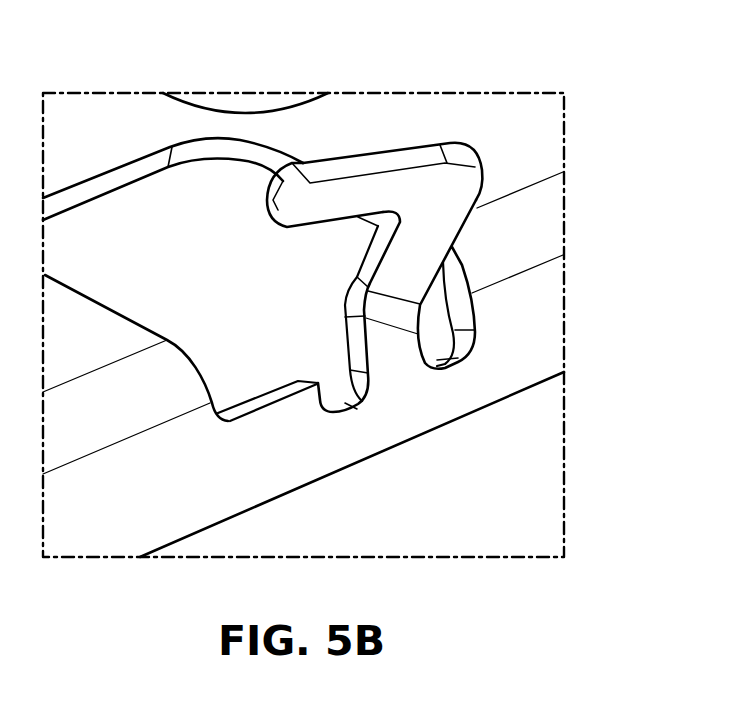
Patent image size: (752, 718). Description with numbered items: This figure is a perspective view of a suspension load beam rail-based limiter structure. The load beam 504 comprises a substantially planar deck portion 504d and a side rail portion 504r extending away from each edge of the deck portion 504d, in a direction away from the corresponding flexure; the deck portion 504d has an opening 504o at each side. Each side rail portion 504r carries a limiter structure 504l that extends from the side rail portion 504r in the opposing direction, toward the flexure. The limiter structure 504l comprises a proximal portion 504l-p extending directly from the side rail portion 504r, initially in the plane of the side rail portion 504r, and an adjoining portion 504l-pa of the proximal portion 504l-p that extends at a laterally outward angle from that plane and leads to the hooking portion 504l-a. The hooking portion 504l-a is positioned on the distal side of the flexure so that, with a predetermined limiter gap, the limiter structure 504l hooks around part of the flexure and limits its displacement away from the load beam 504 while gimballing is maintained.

The load beam 504 is at (528, 58).
The deck portion 504d is at (113, 133).
The opening 504o is at (150, 297).
The side rail portion 504r is at (193, 522).
The limiter structure 504l is at (434, 291).
The hooking portion 504l-a is at (370, 187).
The proximal portion 504l-p is at (415, 238).
The adjoining portion 504l-pa is at (447, 230).